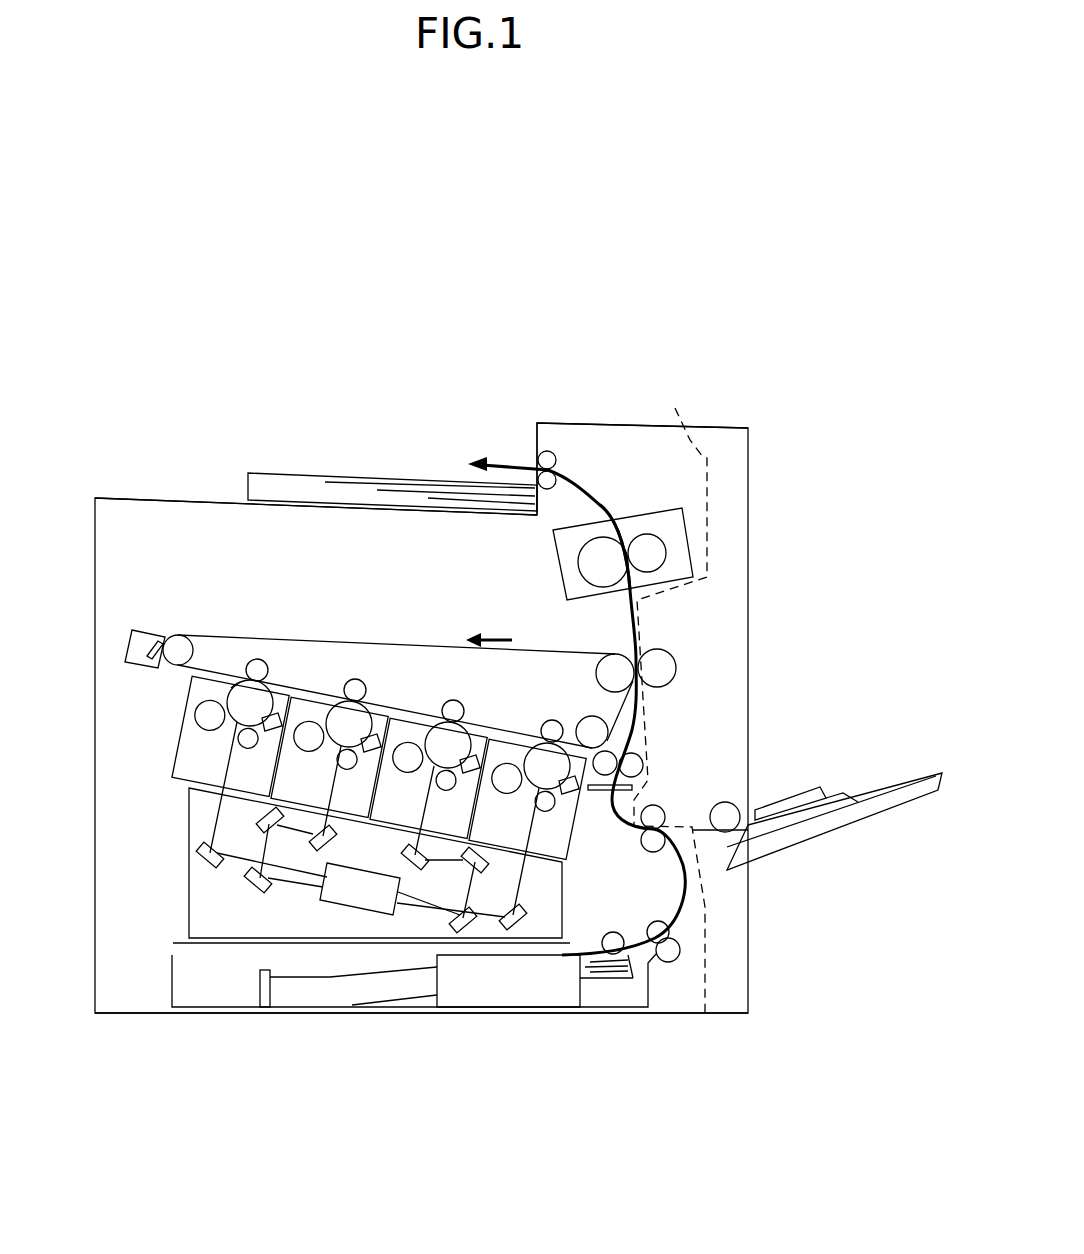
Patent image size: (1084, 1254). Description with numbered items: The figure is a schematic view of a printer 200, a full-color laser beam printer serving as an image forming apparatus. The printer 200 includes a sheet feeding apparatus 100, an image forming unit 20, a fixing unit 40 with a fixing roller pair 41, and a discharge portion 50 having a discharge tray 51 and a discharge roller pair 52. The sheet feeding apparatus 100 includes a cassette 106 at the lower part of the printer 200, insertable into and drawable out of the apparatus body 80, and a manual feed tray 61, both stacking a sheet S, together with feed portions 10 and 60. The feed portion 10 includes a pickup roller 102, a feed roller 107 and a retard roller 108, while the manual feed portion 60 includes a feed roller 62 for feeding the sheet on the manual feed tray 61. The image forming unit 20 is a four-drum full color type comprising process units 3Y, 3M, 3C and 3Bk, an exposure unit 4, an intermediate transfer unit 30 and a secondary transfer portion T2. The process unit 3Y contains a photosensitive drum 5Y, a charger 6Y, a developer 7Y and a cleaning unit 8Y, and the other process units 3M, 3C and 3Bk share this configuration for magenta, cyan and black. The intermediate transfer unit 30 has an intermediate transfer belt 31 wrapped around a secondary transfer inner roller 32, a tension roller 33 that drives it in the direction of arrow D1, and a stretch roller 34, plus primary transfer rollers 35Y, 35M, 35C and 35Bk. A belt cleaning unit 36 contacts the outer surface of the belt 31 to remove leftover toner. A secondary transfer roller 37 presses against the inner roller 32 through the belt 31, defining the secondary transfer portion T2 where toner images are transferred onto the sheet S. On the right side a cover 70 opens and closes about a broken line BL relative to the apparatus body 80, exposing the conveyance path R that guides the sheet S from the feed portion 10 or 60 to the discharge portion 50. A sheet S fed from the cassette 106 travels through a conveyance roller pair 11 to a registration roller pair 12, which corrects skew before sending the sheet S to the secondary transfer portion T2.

The printer 200 is at (770, 392).
The cover 70 is at (750, 600).
The apparatus body 80 is at (600, 423).
The discharge tray 51 is at (220, 500).
The cassette 106 is at (628, 1013).
The discharge portion 50 is at (450, 460).
The sheet S is at (295, 473).
The discharge roller pair 52 is at (550, 450).
The feed portion 10 is at (685, 937).
The conveyance path R is at (603, 490).
The broken line BL is at (670, 697).
The arrow D1 is at (489, 628).
The fixing unit 40 is at (647, 554).
The fixing roller pair 41 is at (577, 570).
The intermediate transfer unit 30 is at (423, 642).
The intermediate transfer belt 31 is at (327, 640).
The secondary transfer inner roller 32 is at (611, 655).
The tension roller 33 is at (592, 716).
The stretch roller 34 is at (178, 637).
The secondary transfer roller 37 is at (676, 670).
The secondary transfer portion T2 is at (640, 652).
The belt cleaning unit 36 is at (128, 646).
The primary transfer roller 35Y is at (257, 659).
The primary transfer roller 35M is at (348, 682).
The primary transfer roller 35C is at (446, 702).
The primary transfer roller 35Bk is at (545, 722).
The registration roller pair 12 is at (642, 768).
The conveyance roller pair 11 is at (658, 806).
The feed portion 60 is at (829, 790).
The manual feed tray 61 is at (897, 803).
The feed roller 62 is at (727, 803).
The image forming unit 20 is at (317, 749).
The process unit 3Y is at (222, 779).
The photosensitive drum 5Y is at (230, 687).
The developer 7Y is at (193, 715).
The charger 6Y is at (260, 750).
The cleaning unit 8Y is at (285, 716).
The process unit 3M is at (322, 800).
The process unit 3C is at (420, 818).
The process unit 3Bk is at (522, 838).
The exposure unit 4 is at (188, 895).
The sheet feeding apparatus 100 is at (375, 939).
The pickup roller 102 is at (612, 932).
The feed roller 107 is at (657, 920).
The retard roller 108 is at (663, 963).